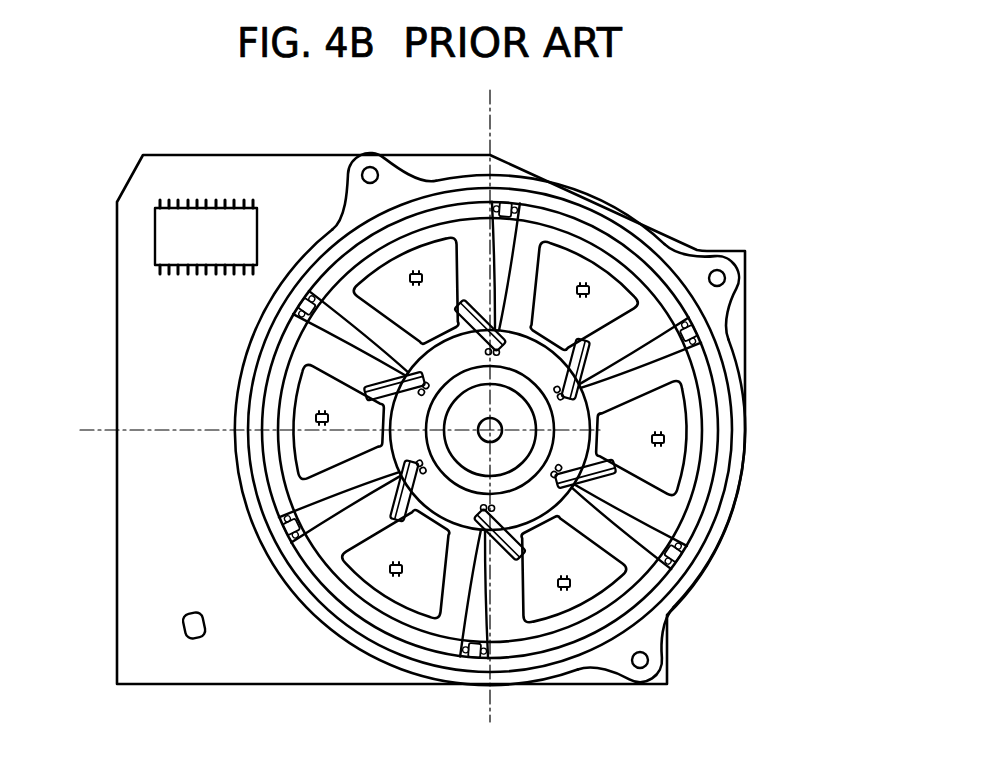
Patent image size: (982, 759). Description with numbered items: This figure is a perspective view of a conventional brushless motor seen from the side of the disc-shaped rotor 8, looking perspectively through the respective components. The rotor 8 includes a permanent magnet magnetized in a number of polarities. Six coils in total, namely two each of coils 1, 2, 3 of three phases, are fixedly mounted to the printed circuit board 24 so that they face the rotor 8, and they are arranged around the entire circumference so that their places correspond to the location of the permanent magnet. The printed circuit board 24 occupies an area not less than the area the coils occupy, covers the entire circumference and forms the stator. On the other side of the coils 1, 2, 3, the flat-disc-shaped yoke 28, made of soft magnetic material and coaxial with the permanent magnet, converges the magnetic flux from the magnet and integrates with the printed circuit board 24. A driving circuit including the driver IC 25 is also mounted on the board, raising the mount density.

The coil 1 is at (430, 205).
The coil 2 is at (262, 373).
The coil 3 is at (613, 230).
The disc-shaped rotor 8 is at (697, 317).
The printed circuit board 24 is at (300, 197).
The driver IC 25 is at (195, 238).
The yoke 28 is at (717, 297).